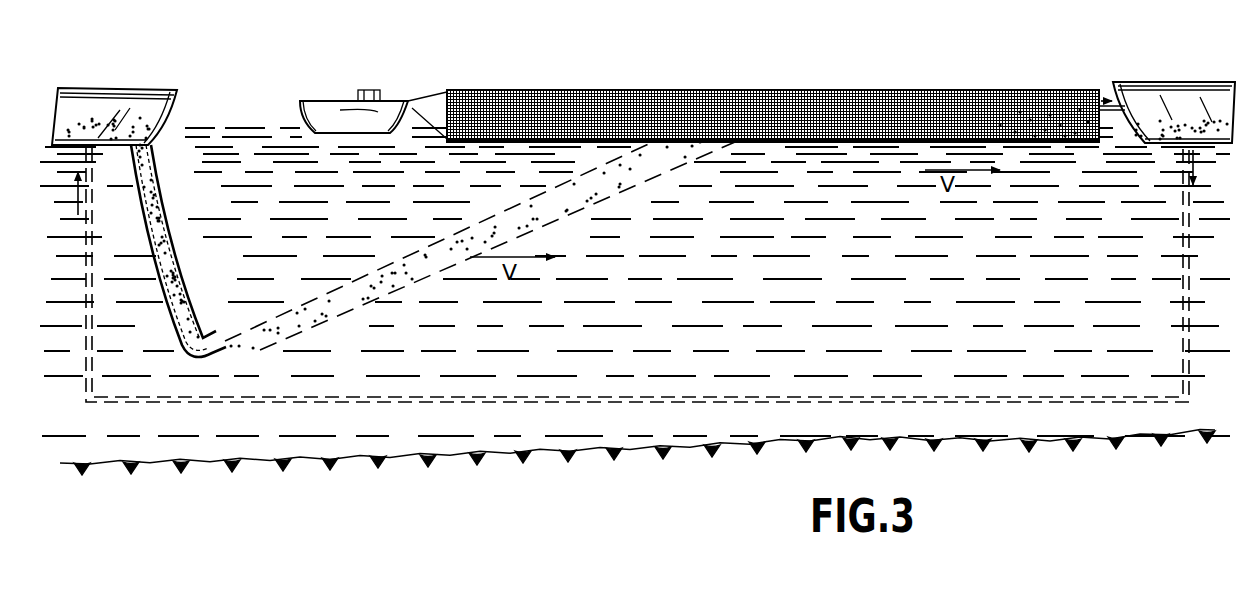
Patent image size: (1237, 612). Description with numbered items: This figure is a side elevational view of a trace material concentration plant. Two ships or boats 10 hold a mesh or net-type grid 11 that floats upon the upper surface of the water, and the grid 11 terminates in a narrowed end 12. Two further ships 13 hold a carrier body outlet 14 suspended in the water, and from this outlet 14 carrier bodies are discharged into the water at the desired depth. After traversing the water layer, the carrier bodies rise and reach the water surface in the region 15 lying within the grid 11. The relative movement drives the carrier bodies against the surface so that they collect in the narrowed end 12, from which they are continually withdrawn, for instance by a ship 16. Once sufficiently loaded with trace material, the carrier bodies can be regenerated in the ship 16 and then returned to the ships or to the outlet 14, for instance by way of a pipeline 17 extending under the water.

The ship 10 is at (318, 112).
The grid 11 is at (578, 112).
The narrowed end 12 is at (1068, 112).
The ship 13 is at (96, 105).
The carrier body outlet 14 is at (200, 362).
The region 15 is at (738, 130).
The ship 16 is at (1176, 100).
The pipeline 17 is at (686, 399).